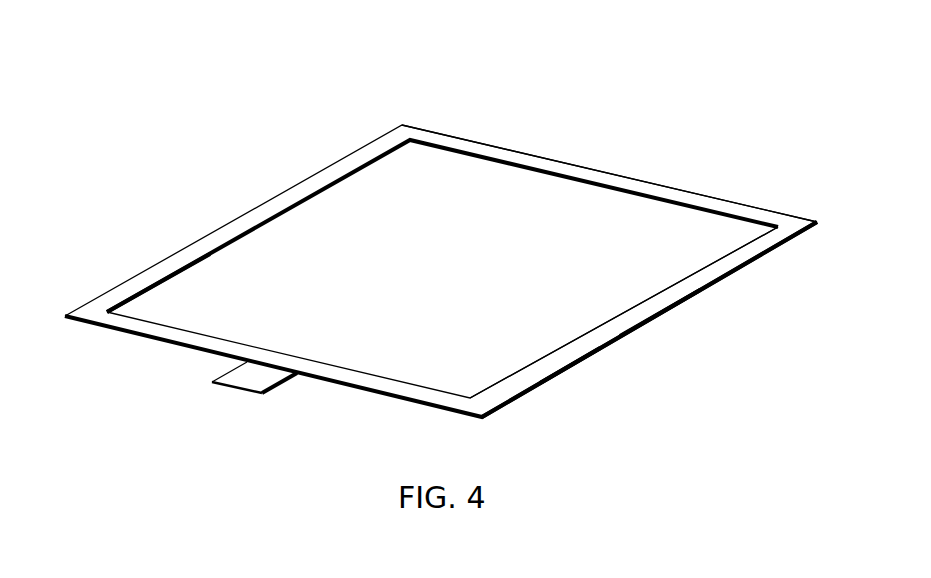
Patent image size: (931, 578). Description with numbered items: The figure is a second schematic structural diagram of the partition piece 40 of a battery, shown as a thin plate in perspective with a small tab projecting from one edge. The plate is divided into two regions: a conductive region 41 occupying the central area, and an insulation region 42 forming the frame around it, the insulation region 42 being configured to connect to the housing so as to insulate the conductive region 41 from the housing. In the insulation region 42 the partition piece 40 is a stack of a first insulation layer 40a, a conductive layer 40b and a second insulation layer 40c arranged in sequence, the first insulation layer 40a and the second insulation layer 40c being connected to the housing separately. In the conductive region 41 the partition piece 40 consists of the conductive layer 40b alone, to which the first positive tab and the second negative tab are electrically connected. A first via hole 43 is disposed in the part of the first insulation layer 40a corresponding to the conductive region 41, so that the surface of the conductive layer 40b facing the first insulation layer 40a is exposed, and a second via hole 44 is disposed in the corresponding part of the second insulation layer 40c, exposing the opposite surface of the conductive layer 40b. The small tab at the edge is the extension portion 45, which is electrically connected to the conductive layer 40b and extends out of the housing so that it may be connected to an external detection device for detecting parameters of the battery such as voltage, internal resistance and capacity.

The partition piece 40 is at (452, 46).
The conductive region 41 is at (373, 192).
The insulation region 42 is at (610, 172).
The first via hole 43 is at (700, 250).
The second via hole 44 is at (687, 322).
The first insulation layer 40a is at (593, 340).
The conductive layer 40b is at (190, 293).
The second insulation layer 40c is at (547, 380).
The extension portion 45 is at (237, 383).